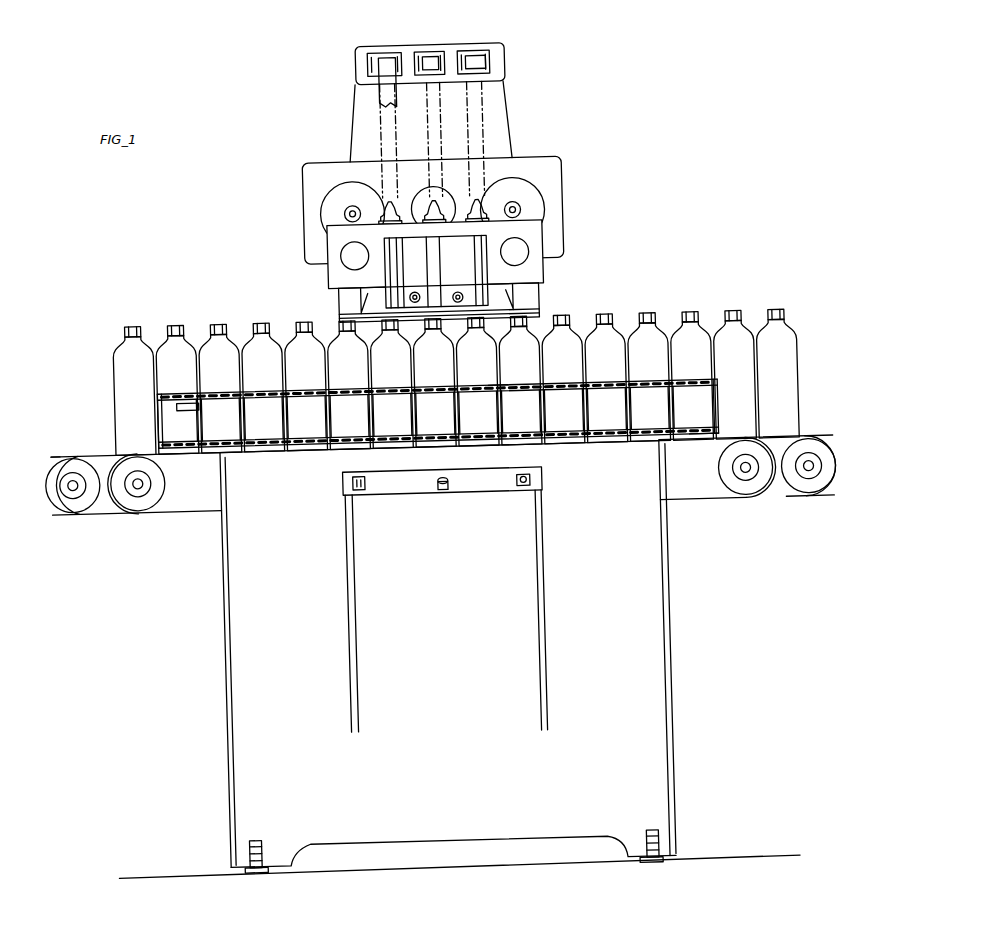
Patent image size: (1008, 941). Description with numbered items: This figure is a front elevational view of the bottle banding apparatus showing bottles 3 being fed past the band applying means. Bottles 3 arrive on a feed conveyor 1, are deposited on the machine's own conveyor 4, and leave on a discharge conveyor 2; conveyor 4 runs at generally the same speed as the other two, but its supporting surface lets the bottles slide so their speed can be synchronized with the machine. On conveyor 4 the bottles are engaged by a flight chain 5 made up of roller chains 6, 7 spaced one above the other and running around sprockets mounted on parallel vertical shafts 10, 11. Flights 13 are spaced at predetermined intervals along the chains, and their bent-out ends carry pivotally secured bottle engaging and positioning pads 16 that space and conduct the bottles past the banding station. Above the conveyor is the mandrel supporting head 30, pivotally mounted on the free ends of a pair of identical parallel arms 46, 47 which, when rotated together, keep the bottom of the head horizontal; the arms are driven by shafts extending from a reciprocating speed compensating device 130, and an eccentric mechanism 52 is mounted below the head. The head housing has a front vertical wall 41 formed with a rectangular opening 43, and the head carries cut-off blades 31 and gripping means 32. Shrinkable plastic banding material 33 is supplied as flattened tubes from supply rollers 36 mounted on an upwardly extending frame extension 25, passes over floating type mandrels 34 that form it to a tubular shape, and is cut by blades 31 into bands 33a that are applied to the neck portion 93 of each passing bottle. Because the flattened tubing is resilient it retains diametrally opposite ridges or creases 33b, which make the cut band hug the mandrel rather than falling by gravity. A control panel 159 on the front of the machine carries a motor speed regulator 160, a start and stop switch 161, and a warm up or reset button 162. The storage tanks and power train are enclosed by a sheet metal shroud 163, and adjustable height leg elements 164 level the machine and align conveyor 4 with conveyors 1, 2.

The feed conveyor 1 is at (813, 506).
The discharge conveyor 2 is at (73, 518).
The bottles 3 is at (781, 304).
The conveyor 4 is at (183, 512).
The flight chain 5 is at (497, 378).
The roller chain 6 is at (400, 388).
The roller chain 7 is at (403, 414).
The shaft 10 is at (198, 452).
The shaft 11 is at (697, 424).
The flights 13 is at (290, 447).
The bottle engaging and positioning pads 16 is at (158, 443).
The extension 25 is at (505, 68).
The mandrel supporting head 30 is at (316, 276).
The cut-off blades 31 is at (340, 316).
The gripping means 32 is at (413, 290).
The banding material 33 is at (380, 89).
The bands 33a is at (213, 323).
The ridges or creases 33b is at (266, 312).
The floating type mandrels 34 is at (388, 196).
The supply rollers 36 is at (383, 52).
The front vertical wall 41 is at (333, 238).
The rectangular opening 43 is at (485, 268).
The parallel arm 46 is at (328, 208).
The parallel arm 47 is at (540, 208).
The eccentric mechanism 52 is at (538, 300).
The neck portion 93 is at (645, 320).
The reciprocating speed compensating device 130 is at (565, 170).
The control panel 159 is at (542, 474).
The motor speed regulator 160 is at (522, 487).
The start and stop switch 161 is at (365, 490).
The warm up or reset button 162 is at (443, 490).
The sheet metal shroud 163 is at (283, 670).
The adjustable height leg elements 164 is at (245, 870).